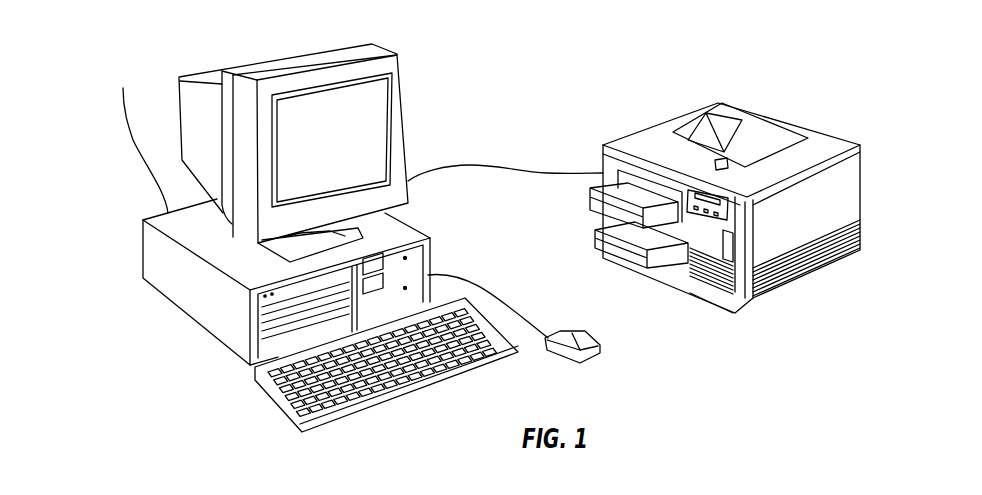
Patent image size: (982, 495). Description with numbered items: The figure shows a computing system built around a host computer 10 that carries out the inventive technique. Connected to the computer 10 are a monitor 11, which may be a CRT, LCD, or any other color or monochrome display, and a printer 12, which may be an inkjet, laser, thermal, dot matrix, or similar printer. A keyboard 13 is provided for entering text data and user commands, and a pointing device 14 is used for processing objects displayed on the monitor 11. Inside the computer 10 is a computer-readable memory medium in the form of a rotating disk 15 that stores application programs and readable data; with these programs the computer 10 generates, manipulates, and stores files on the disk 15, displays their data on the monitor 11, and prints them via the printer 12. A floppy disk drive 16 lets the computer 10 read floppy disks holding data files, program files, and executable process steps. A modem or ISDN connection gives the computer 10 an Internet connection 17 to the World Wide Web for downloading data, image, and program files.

The host computer 10 is at (592, 43).
The monitor 11 is at (372, 117).
The printer 12 is at (637, 142).
The keyboard 13 is at (320, 422).
The pointing device 14 is at (592, 337).
The rotating disk 15 is at (402, 297).
The floppy disk drive 16 is at (407, 275).
The Internet connection 17 is at (137, 84).